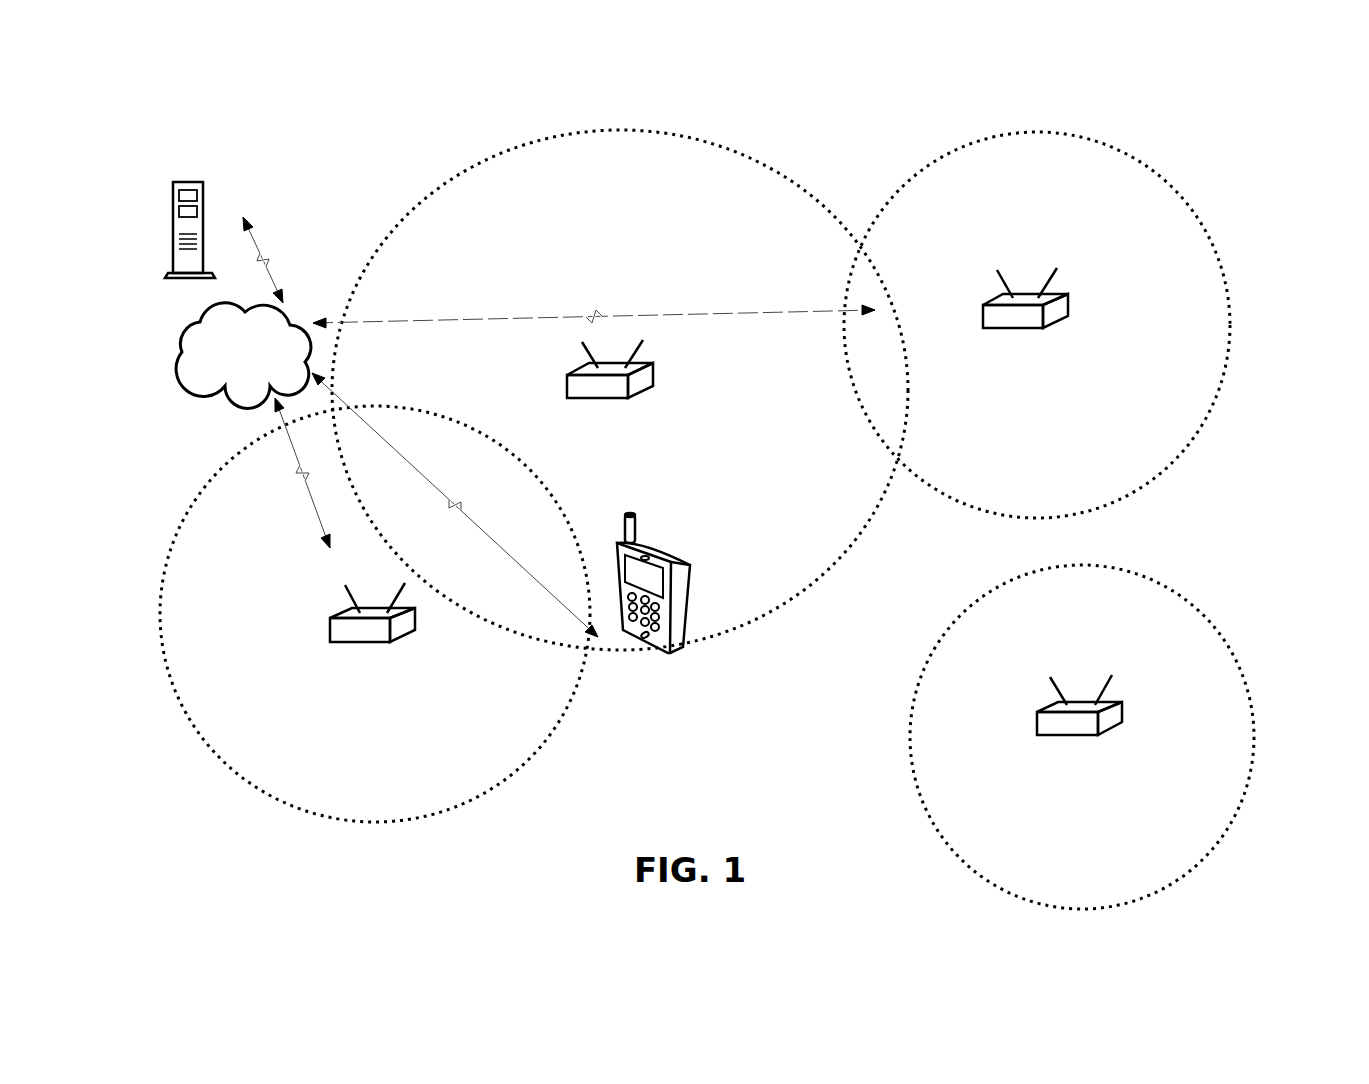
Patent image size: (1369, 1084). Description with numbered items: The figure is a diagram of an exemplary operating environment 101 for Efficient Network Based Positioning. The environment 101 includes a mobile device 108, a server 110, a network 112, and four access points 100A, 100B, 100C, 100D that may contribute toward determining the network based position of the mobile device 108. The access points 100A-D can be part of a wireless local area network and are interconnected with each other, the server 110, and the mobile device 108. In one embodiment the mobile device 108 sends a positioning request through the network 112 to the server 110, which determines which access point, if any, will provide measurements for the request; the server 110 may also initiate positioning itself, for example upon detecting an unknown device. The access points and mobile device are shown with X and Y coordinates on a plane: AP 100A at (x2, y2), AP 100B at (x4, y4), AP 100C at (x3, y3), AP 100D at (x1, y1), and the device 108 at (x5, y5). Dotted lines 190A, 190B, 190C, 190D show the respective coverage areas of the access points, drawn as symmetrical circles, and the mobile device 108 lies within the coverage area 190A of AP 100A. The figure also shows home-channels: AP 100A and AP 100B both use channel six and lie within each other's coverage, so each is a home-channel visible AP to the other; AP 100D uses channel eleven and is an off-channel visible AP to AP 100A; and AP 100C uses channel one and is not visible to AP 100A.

The environment 101 is at (875, 150).
The access point 100A is at (568, 380).
The access point 100B is at (1068, 301).
The access point 100C is at (1122, 706).
The access point 100D is at (331, 621).
The mobile device 108 is at (690, 580).
The server 110 is at (190, 181).
The network 112 is at (243, 356).
The coverage area 190A is at (635, 130).
The coverage area 190B is at (1137, 153).
The coverage area 190C is at (1143, 585).
The coverage area 190D is at (295, 810).